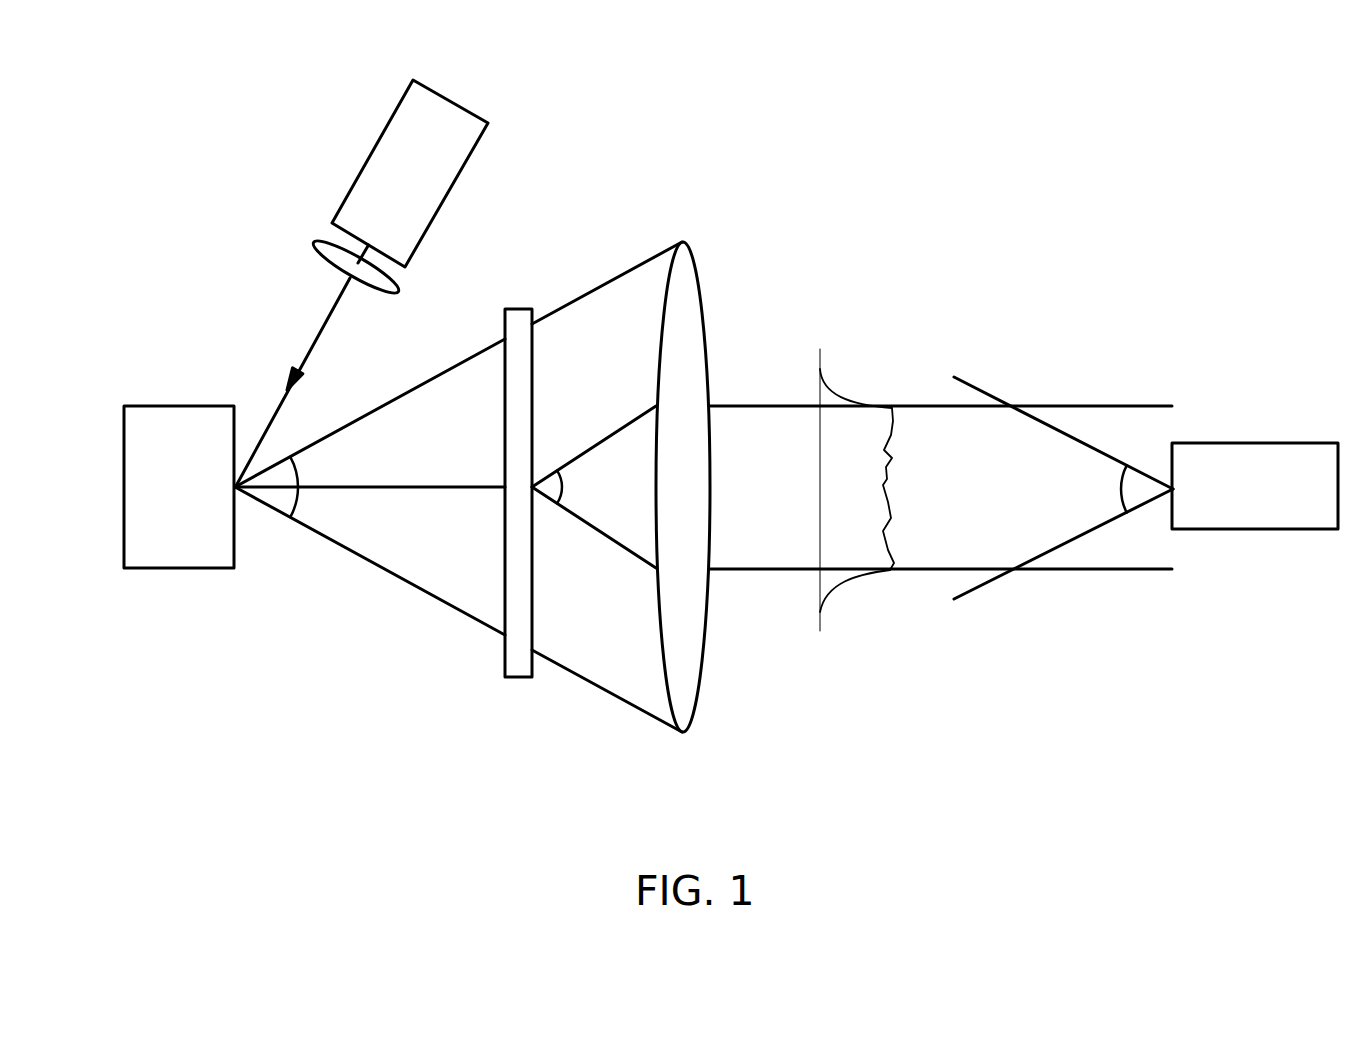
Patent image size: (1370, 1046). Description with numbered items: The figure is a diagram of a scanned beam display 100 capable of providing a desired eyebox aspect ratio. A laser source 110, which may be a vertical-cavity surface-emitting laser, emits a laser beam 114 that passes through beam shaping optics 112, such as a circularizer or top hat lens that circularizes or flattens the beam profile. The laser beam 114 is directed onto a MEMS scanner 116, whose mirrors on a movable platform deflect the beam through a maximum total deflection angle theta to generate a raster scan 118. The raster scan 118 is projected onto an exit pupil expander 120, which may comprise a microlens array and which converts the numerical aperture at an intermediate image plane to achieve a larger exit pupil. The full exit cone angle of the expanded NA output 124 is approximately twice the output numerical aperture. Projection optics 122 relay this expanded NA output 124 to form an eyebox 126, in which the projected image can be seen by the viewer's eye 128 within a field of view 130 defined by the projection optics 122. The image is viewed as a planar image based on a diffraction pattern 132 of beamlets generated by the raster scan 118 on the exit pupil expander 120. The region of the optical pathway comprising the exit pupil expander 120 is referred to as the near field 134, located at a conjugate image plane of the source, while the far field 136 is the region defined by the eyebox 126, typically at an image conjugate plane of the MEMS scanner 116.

The scanned beam display 100 is at (1214, 142).
The laser source 110 is at (468, 107).
The beam shaping optics 112 is at (315, 242).
The laser beam 114 is at (315, 337).
The MEMS scanner 116 is at (192, 406).
The raster scan 118 is at (352, 556).
The exit pupil expander 120 is at (503, 663).
The projection optics 122 is at (704, 313).
The expanded NA output 124 is at (602, 441).
The eyebox 126 is at (1150, 406).
The viewer's eye 128 is at (1295, 443).
The field of view 130 is at (985, 393).
The diffraction pattern 132 is at (845, 400).
The near field 134 is at (563, 225).
The far field 136 is at (1024, 270).